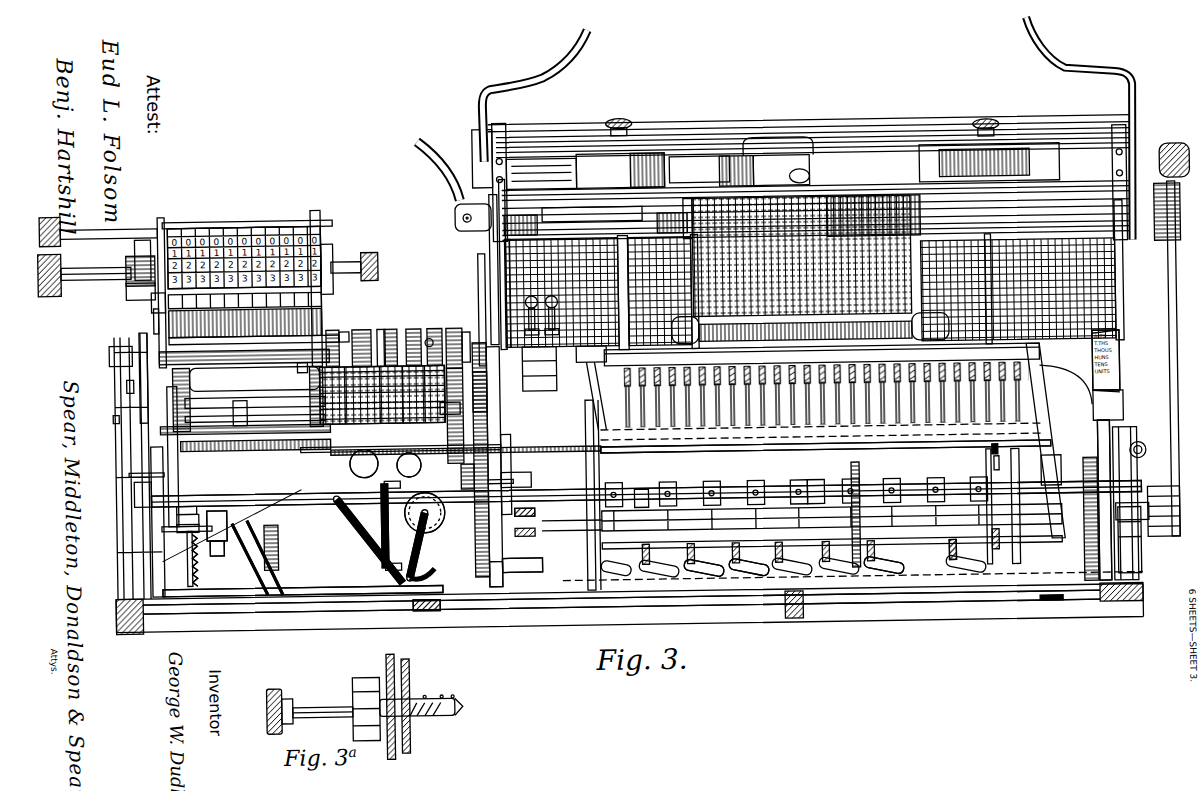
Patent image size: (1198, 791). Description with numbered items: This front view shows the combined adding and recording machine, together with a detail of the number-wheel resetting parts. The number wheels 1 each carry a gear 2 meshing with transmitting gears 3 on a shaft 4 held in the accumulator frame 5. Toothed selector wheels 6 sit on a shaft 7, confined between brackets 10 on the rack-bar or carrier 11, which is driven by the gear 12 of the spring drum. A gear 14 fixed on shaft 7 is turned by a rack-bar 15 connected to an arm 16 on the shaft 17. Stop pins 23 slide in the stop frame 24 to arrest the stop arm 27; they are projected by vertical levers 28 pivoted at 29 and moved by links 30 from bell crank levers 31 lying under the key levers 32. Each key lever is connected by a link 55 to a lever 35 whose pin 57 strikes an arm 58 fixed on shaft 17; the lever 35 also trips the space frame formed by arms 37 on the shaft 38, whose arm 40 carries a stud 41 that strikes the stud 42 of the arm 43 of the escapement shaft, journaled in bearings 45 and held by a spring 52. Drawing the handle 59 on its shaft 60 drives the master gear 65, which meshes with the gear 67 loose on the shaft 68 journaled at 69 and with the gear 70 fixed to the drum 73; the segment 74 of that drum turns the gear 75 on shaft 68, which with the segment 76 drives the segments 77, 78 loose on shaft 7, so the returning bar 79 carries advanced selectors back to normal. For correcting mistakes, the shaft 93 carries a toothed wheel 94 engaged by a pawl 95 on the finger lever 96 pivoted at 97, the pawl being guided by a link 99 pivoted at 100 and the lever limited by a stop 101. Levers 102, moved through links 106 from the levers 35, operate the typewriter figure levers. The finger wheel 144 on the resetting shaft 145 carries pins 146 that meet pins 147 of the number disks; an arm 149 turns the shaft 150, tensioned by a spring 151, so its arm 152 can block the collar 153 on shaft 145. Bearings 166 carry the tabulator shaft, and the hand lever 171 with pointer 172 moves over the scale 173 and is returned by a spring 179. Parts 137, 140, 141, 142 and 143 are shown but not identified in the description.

In FIG. 3, the number wheels 1 is at (165, 213).
In FIG. 3A, the number wheels 1 is at (404, 662).
In FIG. 3, the gear 2 is at (178, 222).
In FIG. 3, the transmitting gears 3 is at (323, 330).
In FIG. 3, the shaft 4 is at (155, 310).
In FIG. 3, the frame of the accumulator mechanism 5 is at (330, 212).
In FIG. 3A, the frame of the accumulator mechanism 5 is at (388, 656).
In FIG. 3, the selector wheels 6 is at (410, 326).
In FIG. 3, the shaft 7 is at (232, 398).
In FIG. 3, the brackets 10 is at (310, 398).
In FIG. 3, the rack-bar or carrier 11 is at (300, 445).
In FIG. 3, the gear 12 is at (255, 545).
In FIG. 3, the gear 14 is at (140, 345).
In FIG. 3, the rack-bar 15 is at (127, 380).
In FIG. 3, the arm 16 is at (128, 468).
In FIG. 3, the shaft 17 is at (145, 495).
In FIG. 3, the stop pins 23 is at (483, 300).
In FIG. 3, the stop frame 24 is at (528, 302).
In FIG. 3, the stop arm 27 is at (490, 325).
In FIG. 3, the vertical levers 28 is at (590, 362).
In FIG. 3, the pivot 29 is at (532, 479).
In FIG. 3, the links 30 is at (568, 598).
In FIG. 3, the bell crank levers 31 is at (690, 580).
In FIG. 3, the key lever 32 is at (740, 580).
In FIG. 3, the lever 35 is at (990, 474).
In FIG. 3, the arms 37 is at (533, 512).
In FIG. 3, the shaft 38 is at (540, 563).
In FIG. 3, the arm 40 is at (215, 552).
In FIG. 3, the stud 41 is at (185, 528).
In FIG. 3, the stud 42 is at (180, 505).
In FIG. 3, the arm 43 is at (175, 520).
In FIG. 3, the bearings 45 is at (232, 548).
In FIG. 3, the spring 52 is at (188, 565).
In FIG. 3, the links 55 is at (990, 540).
In FIG. 3, the pin 57 is at (855, 580).
In FIG. 3, the arm 58 is at (815, 483).
In FIG. 3, the handle 59 is at (1172, 440).
In FIG. 3, the shaft 60 is at (1140, 540).
In FIG. 3, the master gear 65 is at (500, 575).
In FIG. 3, the gear 67 is at (487, 385).
In FIG. 3, the shaft 68 is at (250, 420).
In FIG. 3, the journal 69 is at (113, 412).
In FIG. 3, the gear 70 is at (495, 450).
In FIG. 3, the drum 73 is at (230, 393).
In FIG. 3, the segment 74 is at (412, 463).
In FIG. 3, the gear 75 is at (445, 408).
In FIG. 3, the toothed segment 76 is at (190, 440).
In FIG. 3, the toothed segment 77 is at (450, 330).
In FIG. 3, the toothed segment 78 is at (510, 480).
In FIG. 3, the selector returning bar 79 is at (240, 356).
In FIG. 3, the shaft 93 is at (423, 528).
In FIG. 3, the toothed wheel 94 is at (440, 515).
In FIG. 3, the pawl 95 is at (362, 520).
In FIG. 3, the finger lever 96 is at (275, 540).
In FIG. 3, the pivot 97 is at (418, 560).
In FIG. 3, the link 99 is at (395, 560).
In FIG. 3, the pivot 100 is at (412, 596).
In FIG. 3, the stop 101 is at (335, 560).
In FIG. 3, the levers 102 is at (993, 455).
In FIG. 3, the links 106 is at (993, 470).
In FIG. 3, the knob 137 is at (332, 262).
In FIG. 3, the arm 140 is at (465, 330).
In FIG. 3, the wheel 141 is at (335, 340).
In FIG. 3, the lever 142 is at (152, 294).
In FIG. 3, the bracket 143 is at (112, 345).
In FIG. 3, the finger wheel 144 is at (50, 290).
In FIG. 3A, the finger wheel 144 is at (272, 684).
In FIG. 3, the shaft 145 is at (85, 270).
In FIG. 3A, the shaft 145 is at (318, 703).
In FIG. 3A, the pins 146 is at (410, 713).
In FIG. 3A, the pins 147 is at (412, 693).
In FIG. 3, the arm 149 is at (400, 326).
In FIG. 3, the shaft 150 is at (382, 326).
In FIG. 3, the spring 151 is at (300, 365).
In FIG. 3, the arm 152 is at (130, 258).
In FIG. 3, the cam or collar 153 is at (147, 233).
In FIG. 3A, the cam or collar 153 is at (364, 674).
In FIG. 3, the bearings 166 is at (1140, 570).
In FIG. 3, the lever 171 is at (1125, 295).
In FIG. 3, the pointer 172 is at (1120, 338).
In FIG. 3, the scale 173 is at (1120, 398).
In FIG. 3, the spring 179 is at (1145, 465).